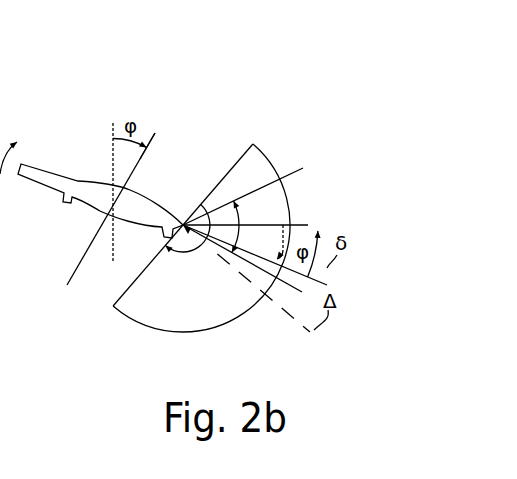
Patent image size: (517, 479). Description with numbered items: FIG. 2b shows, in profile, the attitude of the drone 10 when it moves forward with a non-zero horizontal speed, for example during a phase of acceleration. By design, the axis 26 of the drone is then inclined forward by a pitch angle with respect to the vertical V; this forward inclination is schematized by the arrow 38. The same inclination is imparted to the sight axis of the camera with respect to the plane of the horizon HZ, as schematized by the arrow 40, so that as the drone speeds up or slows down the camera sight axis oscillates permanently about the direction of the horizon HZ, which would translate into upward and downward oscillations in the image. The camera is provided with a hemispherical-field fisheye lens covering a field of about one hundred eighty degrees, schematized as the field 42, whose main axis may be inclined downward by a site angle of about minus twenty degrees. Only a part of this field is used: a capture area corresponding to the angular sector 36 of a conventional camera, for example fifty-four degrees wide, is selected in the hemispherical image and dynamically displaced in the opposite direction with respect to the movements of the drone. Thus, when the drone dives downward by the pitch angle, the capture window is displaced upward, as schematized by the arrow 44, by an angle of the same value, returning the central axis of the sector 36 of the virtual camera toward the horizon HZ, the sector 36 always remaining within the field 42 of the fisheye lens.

The implement 10 is at (100, 184).
The axis of the drone 26 is at (153, 135).
The angular sector of the conventional camera field 36 is at (304, 167).
The arrow of forward inclination 38 is at (152, 133).
The arrow of camera axis inclination 40 is at (273, 270).
The field of the fisheye lens 42 is at (253, 145).
The arrow of capture window displacement 44 is at (318, 231).
The vertical V is at (113, 124).
The horizon HZ is at (308, 224).